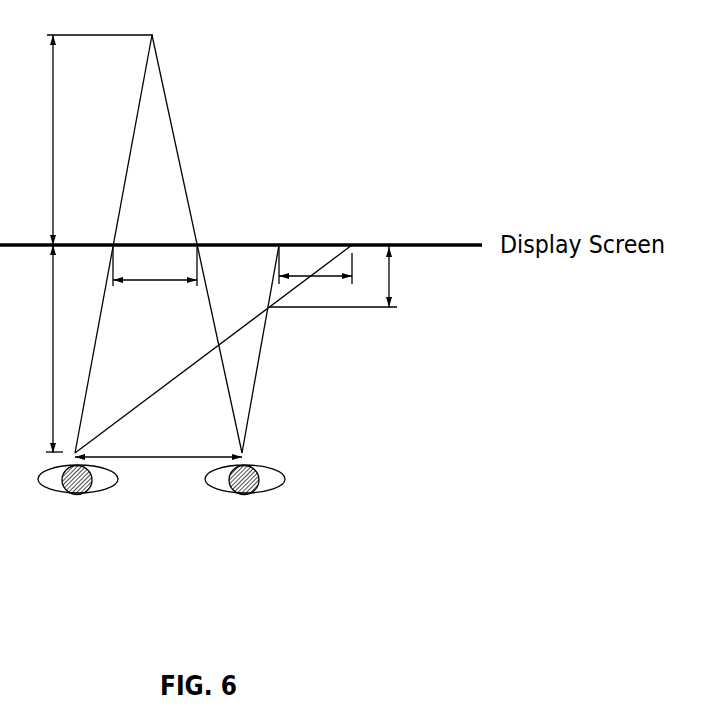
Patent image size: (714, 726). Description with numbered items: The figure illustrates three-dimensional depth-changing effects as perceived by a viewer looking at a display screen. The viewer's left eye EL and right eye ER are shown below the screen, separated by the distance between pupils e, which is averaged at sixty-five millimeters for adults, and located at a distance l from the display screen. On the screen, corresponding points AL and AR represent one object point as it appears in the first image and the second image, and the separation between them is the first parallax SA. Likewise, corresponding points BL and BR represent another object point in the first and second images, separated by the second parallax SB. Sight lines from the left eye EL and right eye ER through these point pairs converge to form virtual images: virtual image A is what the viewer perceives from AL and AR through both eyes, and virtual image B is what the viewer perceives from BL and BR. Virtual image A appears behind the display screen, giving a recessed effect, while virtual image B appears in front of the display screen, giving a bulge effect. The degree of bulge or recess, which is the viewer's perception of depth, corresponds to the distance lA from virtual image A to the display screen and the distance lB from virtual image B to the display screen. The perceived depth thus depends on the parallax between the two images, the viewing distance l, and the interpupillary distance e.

The virtual image A is at (144, 238).
The corresponding point AL is at (95, 253).
The corresponding point AR is at (213, 253).
The virtual image B is at (236, 349).
The corresponding point BR is at (278, 251).
The corresponding point BL is at (349, 251).
The left eye EL is at (78, 503).
The right eye ER is at (245, 503).
The distance from virtual image A to the display screen lA is at (38, 140).
The distance between the eyes and the display screen l is at (48, 349).
The distance from virtual image B to the display screen lB is at (404, 276).
The first parallax SA is at (155, 268).
The second parallax SB is at (315, 291).
The distance between pupils e is at (158, 446).